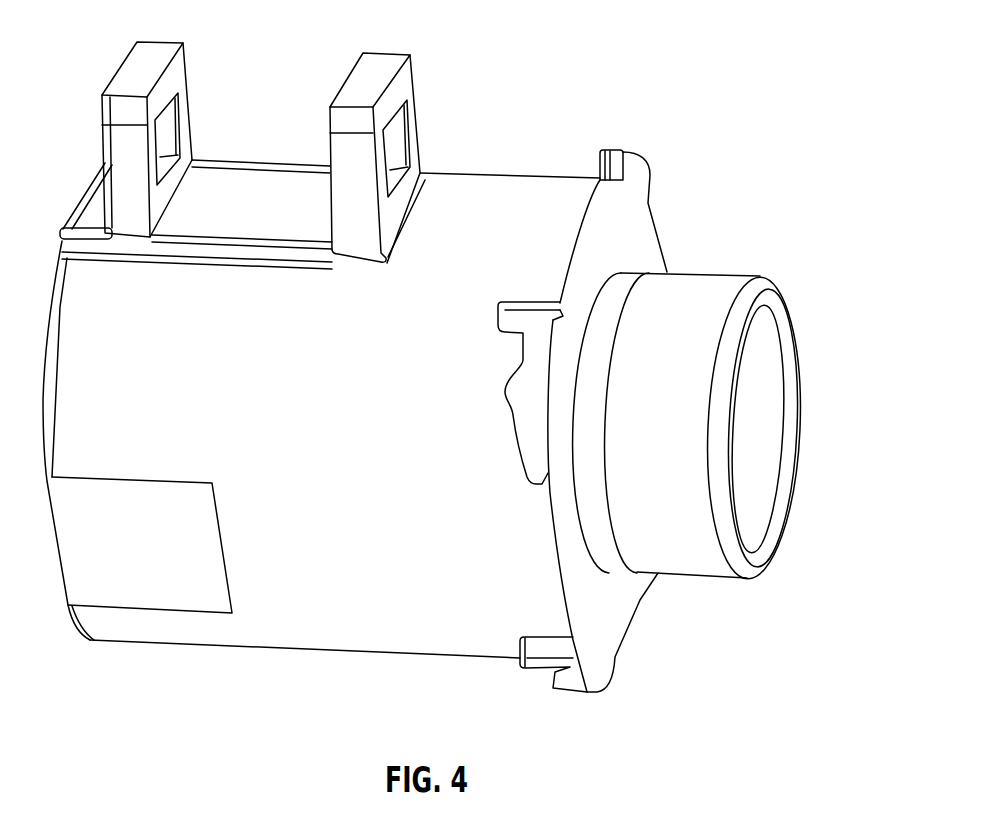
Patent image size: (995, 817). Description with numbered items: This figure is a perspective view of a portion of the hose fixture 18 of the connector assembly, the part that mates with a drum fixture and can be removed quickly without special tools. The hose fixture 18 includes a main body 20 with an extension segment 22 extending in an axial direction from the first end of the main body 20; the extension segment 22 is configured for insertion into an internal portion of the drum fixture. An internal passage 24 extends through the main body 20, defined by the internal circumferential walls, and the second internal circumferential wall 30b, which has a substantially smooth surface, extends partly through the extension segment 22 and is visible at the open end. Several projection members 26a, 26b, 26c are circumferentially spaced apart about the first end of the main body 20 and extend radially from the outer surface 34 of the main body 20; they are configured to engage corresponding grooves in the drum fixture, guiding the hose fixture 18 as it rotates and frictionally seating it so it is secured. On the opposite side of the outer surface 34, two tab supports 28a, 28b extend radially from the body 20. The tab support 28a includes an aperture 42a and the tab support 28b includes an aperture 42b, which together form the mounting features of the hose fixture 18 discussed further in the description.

The hose fixture 18 is at (768, 86).
The main body 20 is at (317, 653).
The extension segment 22 is at (703, 582).
The internal passage 24 is at (760, 490).
The projection member 26a is at (616, 150).
The projection member 26b is at (587, 692).
The projection member 26c is at (503, 393).
The tab support 28a is at (157, 42).
The tab support 28b is at (378, 53).
The second internal circumferential wall 30b is at (756, 426).
The outer surface 34 is at (417, 638).
The aperture 42a is at (163, 135).
The aperture 42b is at (400, 137).